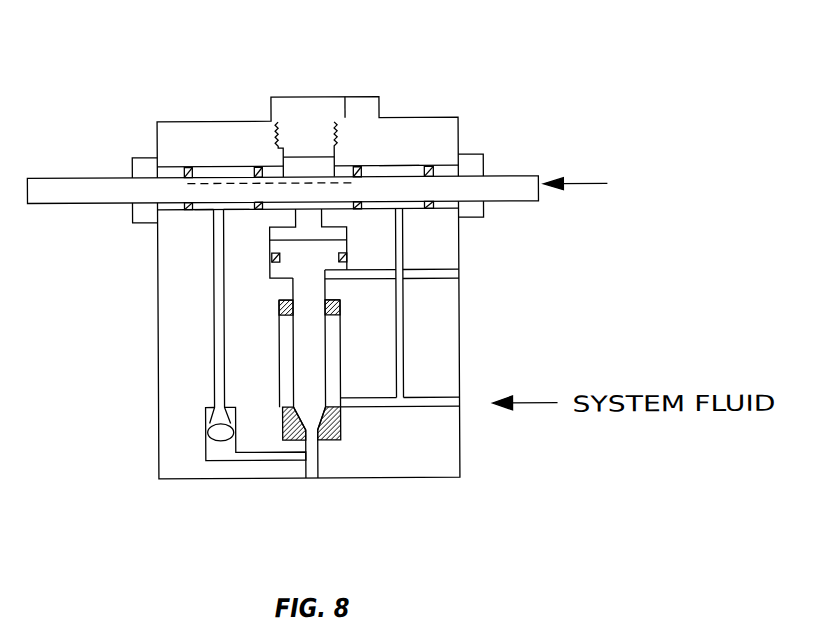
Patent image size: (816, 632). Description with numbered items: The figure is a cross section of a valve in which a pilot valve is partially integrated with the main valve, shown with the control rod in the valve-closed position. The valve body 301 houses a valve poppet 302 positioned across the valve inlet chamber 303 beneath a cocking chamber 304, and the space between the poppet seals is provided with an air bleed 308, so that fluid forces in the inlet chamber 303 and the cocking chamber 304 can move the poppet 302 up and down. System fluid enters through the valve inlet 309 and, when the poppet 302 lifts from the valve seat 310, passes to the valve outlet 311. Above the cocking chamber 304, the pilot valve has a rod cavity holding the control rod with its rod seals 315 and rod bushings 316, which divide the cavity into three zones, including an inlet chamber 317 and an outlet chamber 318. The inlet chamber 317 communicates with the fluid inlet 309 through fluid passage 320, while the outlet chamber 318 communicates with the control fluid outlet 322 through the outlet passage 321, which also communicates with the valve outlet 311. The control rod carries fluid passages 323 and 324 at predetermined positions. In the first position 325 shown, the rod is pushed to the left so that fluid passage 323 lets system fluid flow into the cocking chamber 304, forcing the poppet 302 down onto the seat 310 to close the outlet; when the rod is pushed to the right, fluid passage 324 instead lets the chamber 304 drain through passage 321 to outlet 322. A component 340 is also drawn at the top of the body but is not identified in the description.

The valve body 301 is at (452, 139).
The threaded plug 340 is at (299, 125).
The fluid passage 323 is at (365, 193).
The fluid passage 324 is at (227, 185).
The rod seals 315 is at (188, 170).
The rod bushings 316 is at (413, 167).
The inlet chamber 317 is at (387, 167).
The outlet chamber 318 is at (212, 209).
The first position 325 is at (605, 184).
The cocking chamber 304 is at (338, 232).
The valve poppet 302 is at (313, 328).
The valve inlet chamber 303 is at (335, 362).
The air bleed 308 is at (459, 272).
The fluid passage 320 is at (398, 294).
The valve inlet 309 is at (460, 402).
The valve seat 310 is at (340, 438).
The valve outlet 311 is at (313, 462).
The outlet passage 321 is at (217, 345).
The control fluid outlet 322 is at (207, 415).